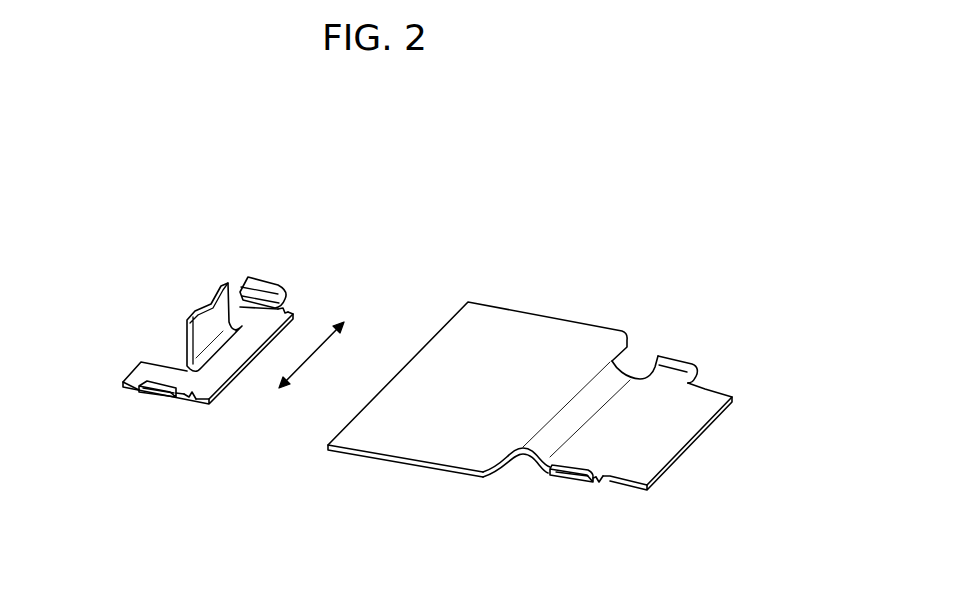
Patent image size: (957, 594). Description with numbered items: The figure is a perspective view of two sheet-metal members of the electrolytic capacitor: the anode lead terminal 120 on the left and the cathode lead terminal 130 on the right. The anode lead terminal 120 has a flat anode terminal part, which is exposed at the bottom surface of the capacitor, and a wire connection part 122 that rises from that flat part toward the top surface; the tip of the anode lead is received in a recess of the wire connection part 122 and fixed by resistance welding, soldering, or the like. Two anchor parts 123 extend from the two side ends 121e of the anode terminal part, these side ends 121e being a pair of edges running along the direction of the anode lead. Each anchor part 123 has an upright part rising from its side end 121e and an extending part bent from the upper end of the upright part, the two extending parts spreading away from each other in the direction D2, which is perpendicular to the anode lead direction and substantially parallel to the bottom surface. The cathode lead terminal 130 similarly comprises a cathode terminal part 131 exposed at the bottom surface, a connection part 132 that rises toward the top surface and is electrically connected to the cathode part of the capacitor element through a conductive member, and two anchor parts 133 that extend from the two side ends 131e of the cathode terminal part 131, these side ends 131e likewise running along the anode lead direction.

The anode lead terminal 120 is at (233, 289).
The side ends 121e is at (293, 301).
The wire connection part 122 is at (185, 337).
The anchor parts 123 is at (252, 280).
The cathode lead terminal 130 is at (545, 365).
The cathode terminal part 131 is at (678, 433).
The side ends 131e is at (711, 385).
The connection part 132 is at (420, 450).
The anchor parts 133 is at (675, 362).
The direction D2 is at (311, 355).